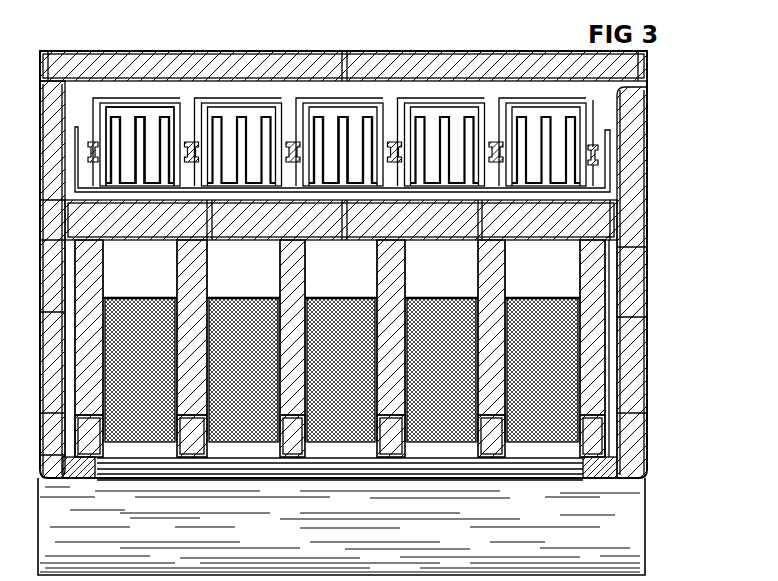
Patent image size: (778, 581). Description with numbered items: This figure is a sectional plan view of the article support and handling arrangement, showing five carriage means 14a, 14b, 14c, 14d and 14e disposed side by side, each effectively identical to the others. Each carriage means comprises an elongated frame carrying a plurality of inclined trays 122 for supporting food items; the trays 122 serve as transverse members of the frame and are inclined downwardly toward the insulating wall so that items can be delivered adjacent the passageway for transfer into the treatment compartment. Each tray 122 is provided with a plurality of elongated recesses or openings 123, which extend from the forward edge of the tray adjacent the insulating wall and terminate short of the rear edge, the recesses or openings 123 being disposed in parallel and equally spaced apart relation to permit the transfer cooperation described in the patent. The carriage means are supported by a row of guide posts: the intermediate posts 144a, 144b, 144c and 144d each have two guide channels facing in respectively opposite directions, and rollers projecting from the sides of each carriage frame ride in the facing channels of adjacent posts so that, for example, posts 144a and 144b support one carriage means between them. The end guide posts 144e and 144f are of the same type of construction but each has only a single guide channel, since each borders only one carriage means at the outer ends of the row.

The carriage means 14a is at (140, 78).
The carriage means 14b is at (246, 78).
The carriage means 14c is at (357, 84).
The carriage means 14d is at (449, 84).
The carriage means 14e is at (542, 84).
The inclined tray 122 is at (116, 138).
The elongated recesses or openings 123 is at (141, 132).
The end guide post 144f is at (93, 163).
The guide post 144a is at (190, 163).
The guide post 144b is at (294, 163).
The guide post 144c is at (394, 163).
The guide post 144d is at (497, 163).
The end guide post 144e is at (594, 166).